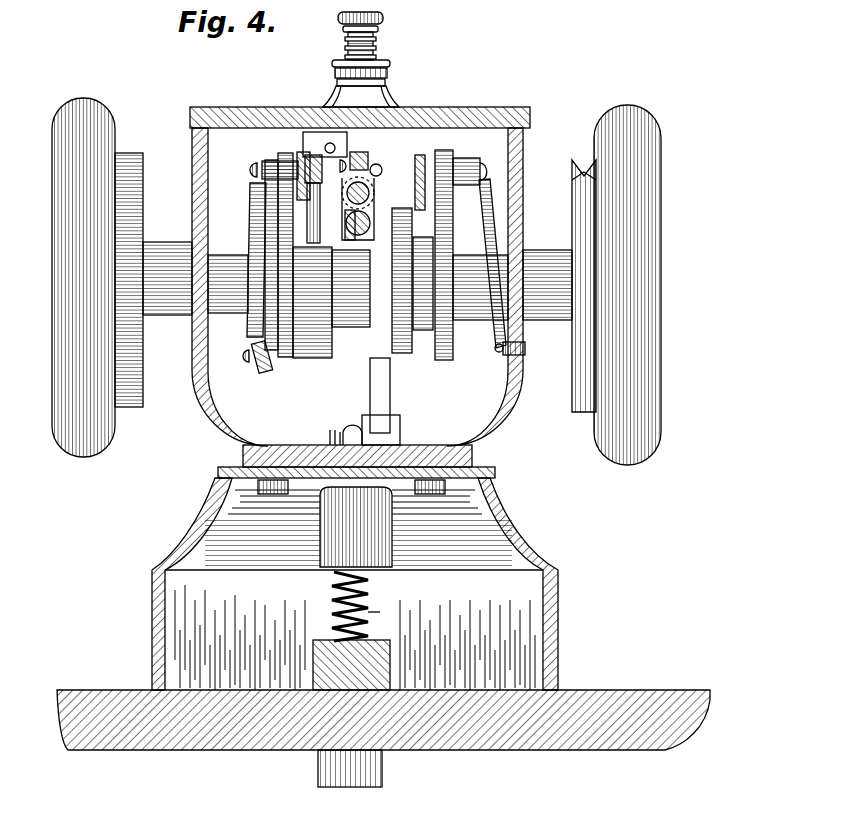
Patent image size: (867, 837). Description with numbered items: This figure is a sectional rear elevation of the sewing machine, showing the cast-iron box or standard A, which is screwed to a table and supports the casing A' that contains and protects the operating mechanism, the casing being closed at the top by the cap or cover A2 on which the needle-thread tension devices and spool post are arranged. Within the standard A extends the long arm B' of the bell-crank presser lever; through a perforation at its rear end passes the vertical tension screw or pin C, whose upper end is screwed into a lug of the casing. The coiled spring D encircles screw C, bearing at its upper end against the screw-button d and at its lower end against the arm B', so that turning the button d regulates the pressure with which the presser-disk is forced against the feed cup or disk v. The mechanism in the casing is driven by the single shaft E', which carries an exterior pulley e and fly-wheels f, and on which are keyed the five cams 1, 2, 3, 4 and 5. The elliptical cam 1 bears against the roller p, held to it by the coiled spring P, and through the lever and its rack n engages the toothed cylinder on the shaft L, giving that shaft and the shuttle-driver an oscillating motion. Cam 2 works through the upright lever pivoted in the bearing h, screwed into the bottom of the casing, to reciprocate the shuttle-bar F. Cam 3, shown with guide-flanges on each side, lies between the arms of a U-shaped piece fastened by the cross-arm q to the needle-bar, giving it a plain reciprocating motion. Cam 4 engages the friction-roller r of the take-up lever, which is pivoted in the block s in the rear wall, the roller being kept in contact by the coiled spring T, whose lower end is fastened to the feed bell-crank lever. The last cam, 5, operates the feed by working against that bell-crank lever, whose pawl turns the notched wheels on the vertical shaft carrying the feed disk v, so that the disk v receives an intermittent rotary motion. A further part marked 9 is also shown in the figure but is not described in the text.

The cap or cover A2 is at (360, 98).
The casing A' is at (348, 287).
The box or standard A is at (355, 584).
The long arm of presser foot or arm B' is at (351, 665).
The tension screw or pin C is at (372, 583).
The coiled spring D is at (375, 622).
The fly-wheel f is at (356, 281).
The pulley e is at (578, 276).
The shaft E' is at (357, 281).
The coiled spring T is at (248, 224).
The cam 1 is at (451, 255).
The cam 2 is at (402, 280).
The cam 3 is at (312, 302).
The cam 4 is at (285, 255).
The cam 5 is at (276, 244).
The roller p is at (470, 161).
The coiled spring P is at (493, 267).
The friction-roller r is at (272, 161).
The block s is at (300, 156).
The cross-arm q is at (340, 205).
The screw-button d is at (325, 142).
The shuttle-bar F is at (398, 148).
The shaft L is at (351, 208).
The rack n is at (384, 185).
The feed cup or disk v is at (283, 387).
The bar 9 is at (371, 395).
The bearing h is at (420, 428).